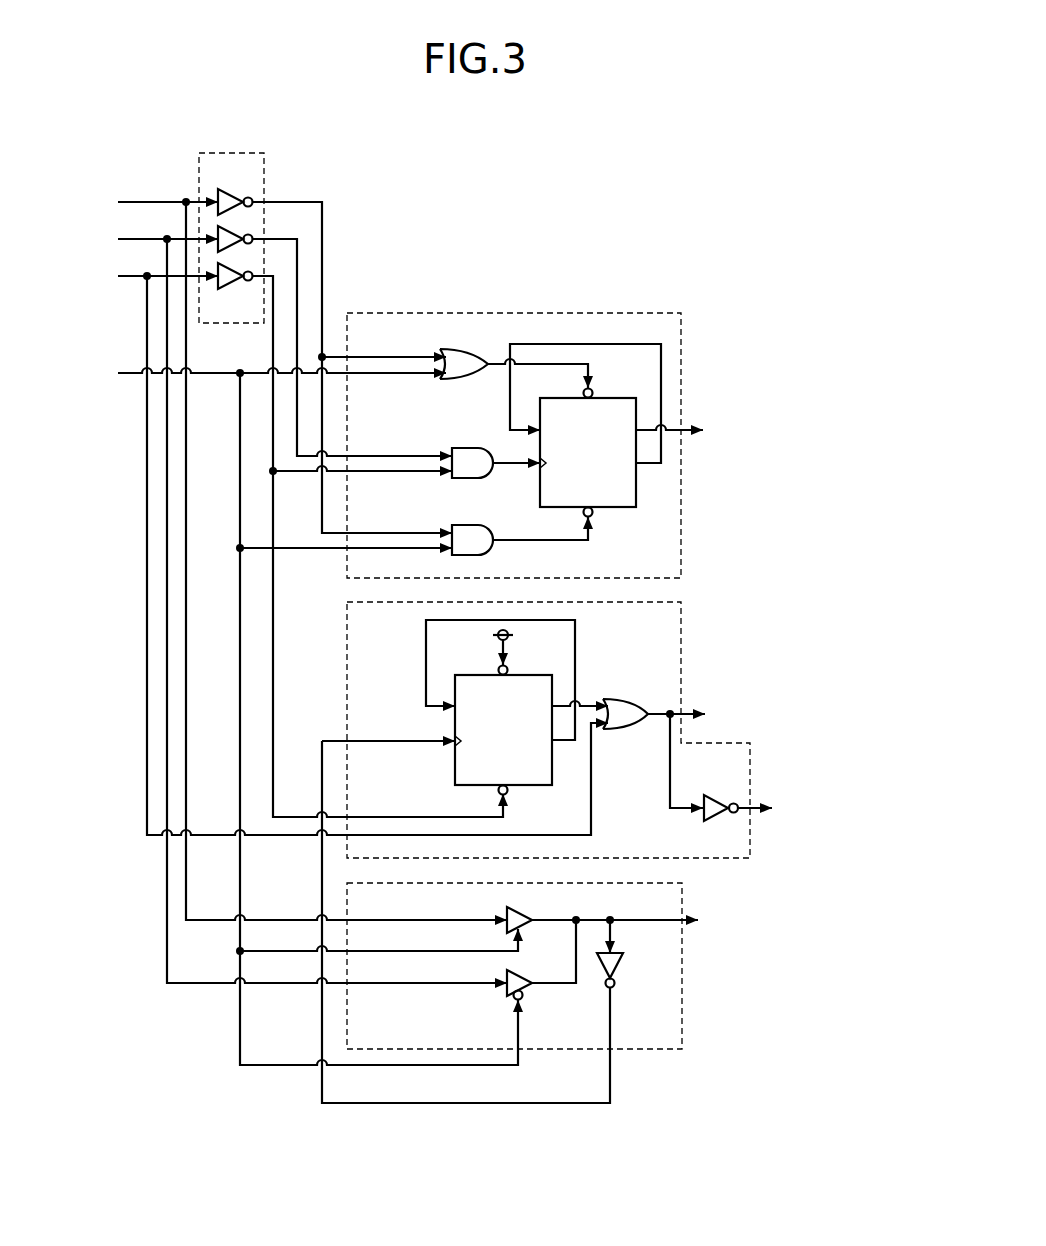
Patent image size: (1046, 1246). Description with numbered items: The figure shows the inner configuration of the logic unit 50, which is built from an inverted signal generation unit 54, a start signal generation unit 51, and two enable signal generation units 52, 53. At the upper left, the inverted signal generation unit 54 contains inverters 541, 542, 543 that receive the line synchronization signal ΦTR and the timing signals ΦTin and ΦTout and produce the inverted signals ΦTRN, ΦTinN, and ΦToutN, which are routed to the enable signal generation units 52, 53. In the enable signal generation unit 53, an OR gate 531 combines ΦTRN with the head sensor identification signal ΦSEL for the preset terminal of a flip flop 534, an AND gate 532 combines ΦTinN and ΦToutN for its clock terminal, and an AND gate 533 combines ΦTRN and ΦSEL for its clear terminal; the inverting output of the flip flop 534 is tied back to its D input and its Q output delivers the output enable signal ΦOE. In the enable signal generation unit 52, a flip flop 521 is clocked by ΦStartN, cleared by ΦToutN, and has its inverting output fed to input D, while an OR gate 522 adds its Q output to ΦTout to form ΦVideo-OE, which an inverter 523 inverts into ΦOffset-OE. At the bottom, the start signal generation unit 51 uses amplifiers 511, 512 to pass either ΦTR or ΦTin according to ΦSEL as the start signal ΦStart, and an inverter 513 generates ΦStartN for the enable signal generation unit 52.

The logic unit 50 is at (637, 161).
The start signal generation unit 51 is at (682, 960).
The enable signal generation unit 52 is at (681, 615).
The enable signal generation unit 53 is at (681, 335).
The inverted signal generation unit 54 is at (246, 152).
The amplifier 511 is at (522, 910).
The amplifier 512 is at (527, 976).
The inverter 513 is at (625, 966).
The flip flop 521 is at (538, 674).
The OR gate 522 is at (618, 697).
The inverter 523 is at (717, 796).
The OR gate 531 is at (476, 349).
The AND gate 532 is at (476, 447).
The AND gate 533 is at (476, 522).
The flip flop 534 is at (620, 397).
The inverter 541 is at (244, 185).
The inverter 542 is at (262, 232).
The inverter 543 is at (232, 287).